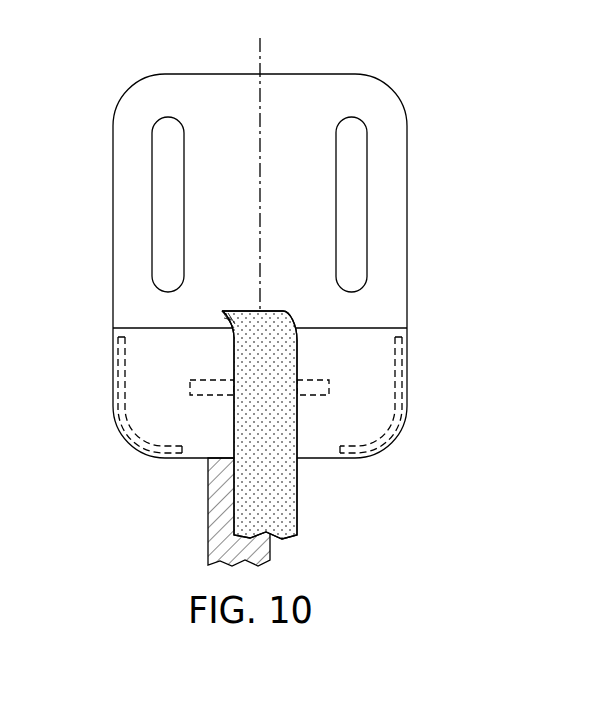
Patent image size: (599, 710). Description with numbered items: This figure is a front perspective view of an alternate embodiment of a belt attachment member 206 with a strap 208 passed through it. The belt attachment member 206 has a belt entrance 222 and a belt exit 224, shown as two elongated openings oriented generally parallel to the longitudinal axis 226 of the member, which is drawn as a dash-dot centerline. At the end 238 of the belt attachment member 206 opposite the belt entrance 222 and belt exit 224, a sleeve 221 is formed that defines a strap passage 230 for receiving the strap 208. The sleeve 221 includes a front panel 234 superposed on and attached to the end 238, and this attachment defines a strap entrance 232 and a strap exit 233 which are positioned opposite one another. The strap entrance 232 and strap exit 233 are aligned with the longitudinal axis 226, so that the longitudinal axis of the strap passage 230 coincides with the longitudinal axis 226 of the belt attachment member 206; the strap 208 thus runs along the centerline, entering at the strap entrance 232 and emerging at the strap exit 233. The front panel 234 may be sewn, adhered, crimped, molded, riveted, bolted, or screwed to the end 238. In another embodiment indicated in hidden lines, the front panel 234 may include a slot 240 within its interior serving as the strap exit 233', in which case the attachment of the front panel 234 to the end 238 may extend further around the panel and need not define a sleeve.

The belt attachment member 206 is at (392, 90).
The longitudinal axis 226 is at (262, 47).
The belt exit 224 is at (162, 172).
The belt entrance 222 is at (367, 172).
The sleeve 221 is at (407, 358).
The end 238 is at (128, 438).
The front panel 234 is at (375, 428).
The slot 240 is at (212, 379).
The strap exit 233' is at (342, 372).
The strap entrance 232 is at (183, 460).
The strap 208 is at (297, 496).
The strap exit 233 is at (213, 298).
The strap passage 230 is at (306, 302).